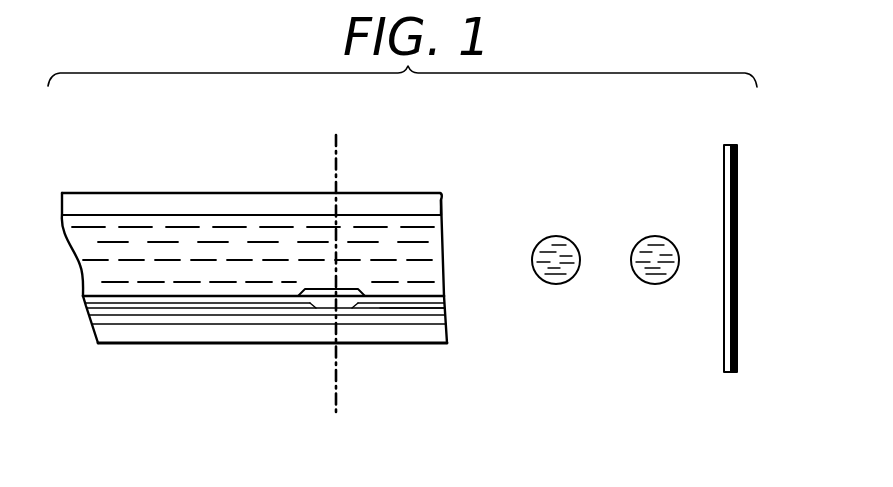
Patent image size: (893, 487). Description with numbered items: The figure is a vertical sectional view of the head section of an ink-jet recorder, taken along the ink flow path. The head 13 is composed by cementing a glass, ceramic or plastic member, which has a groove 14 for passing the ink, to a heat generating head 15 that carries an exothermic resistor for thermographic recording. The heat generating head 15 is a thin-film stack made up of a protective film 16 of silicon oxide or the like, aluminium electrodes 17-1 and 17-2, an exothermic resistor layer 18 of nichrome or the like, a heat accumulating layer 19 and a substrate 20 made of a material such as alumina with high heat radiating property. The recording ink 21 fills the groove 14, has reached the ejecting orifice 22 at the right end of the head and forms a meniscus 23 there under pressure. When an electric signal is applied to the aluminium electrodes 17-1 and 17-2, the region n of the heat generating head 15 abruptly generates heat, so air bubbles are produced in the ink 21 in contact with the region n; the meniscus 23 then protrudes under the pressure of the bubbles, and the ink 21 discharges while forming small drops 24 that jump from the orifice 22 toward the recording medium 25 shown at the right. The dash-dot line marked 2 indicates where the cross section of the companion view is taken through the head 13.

The section line 2— 2 is at (337, 274).
The head 13 is at (187, 192).
The groove 14 is at (245, 217).
The heat generating head 15 is at (241, 353).
The protective film 16 is at (120, 298).
The aluminium electrode 17-1 is at (175, 307).
The aluminium electrode 17-2 is at (430, 310).
The exothermic resistor layer 18 is at (250, 313).
The heat accumulating layer 19 is at (297, 323).
The substrate 20 is at (383, 338).
The recording ink 21 is at (100, 222).
The ejecting orifice 22 is at (455, 278).
The meniscus 23 is at (443, 267).
The small drops 24 is at (682, 232).
The recording medium 25 is at (724, 206).
The region n is at (325, 288).